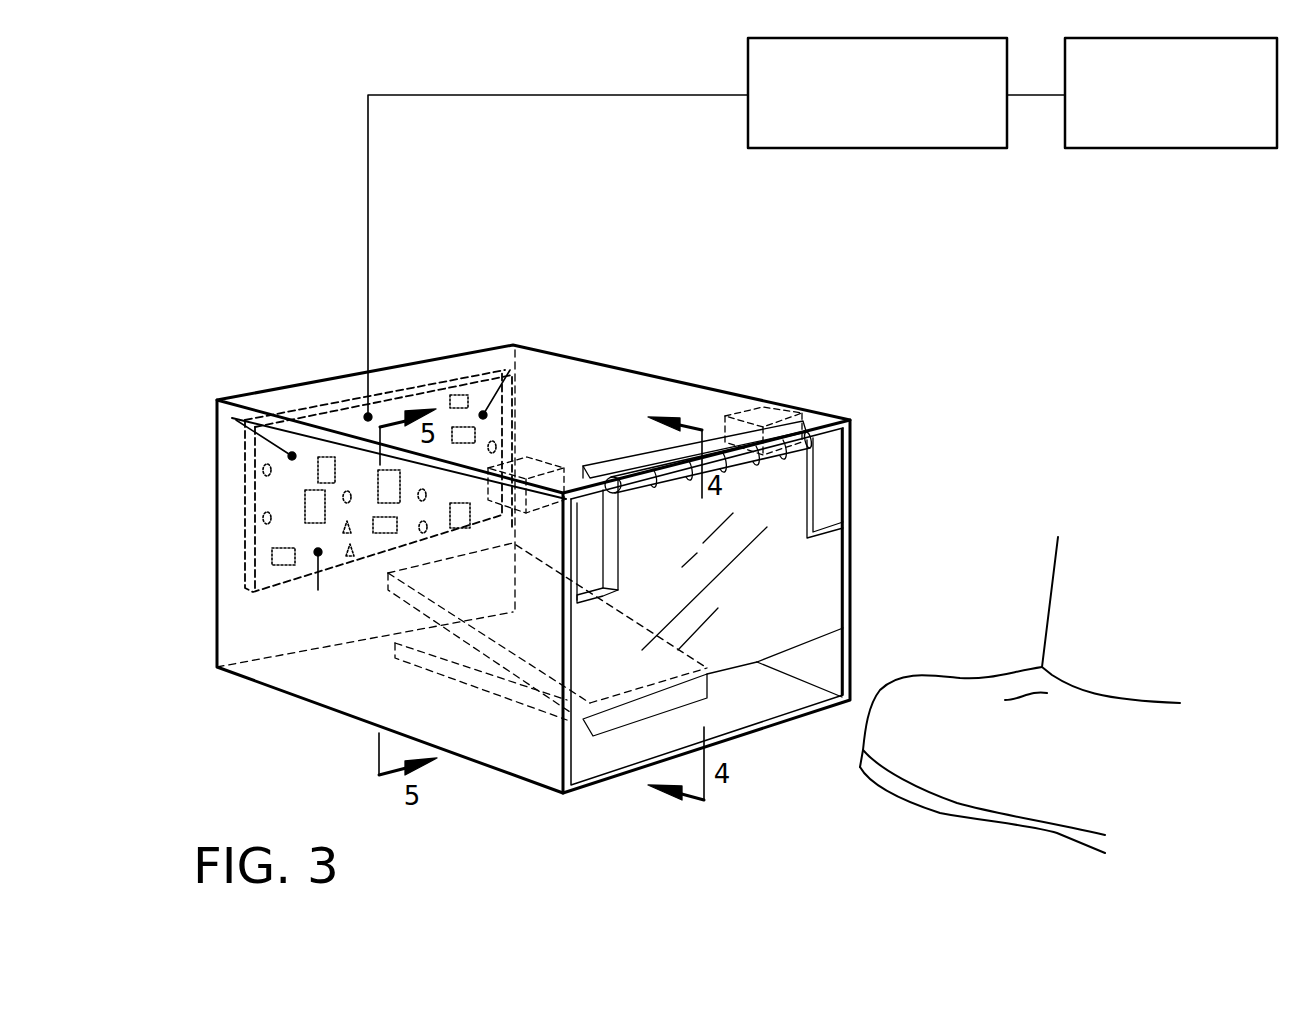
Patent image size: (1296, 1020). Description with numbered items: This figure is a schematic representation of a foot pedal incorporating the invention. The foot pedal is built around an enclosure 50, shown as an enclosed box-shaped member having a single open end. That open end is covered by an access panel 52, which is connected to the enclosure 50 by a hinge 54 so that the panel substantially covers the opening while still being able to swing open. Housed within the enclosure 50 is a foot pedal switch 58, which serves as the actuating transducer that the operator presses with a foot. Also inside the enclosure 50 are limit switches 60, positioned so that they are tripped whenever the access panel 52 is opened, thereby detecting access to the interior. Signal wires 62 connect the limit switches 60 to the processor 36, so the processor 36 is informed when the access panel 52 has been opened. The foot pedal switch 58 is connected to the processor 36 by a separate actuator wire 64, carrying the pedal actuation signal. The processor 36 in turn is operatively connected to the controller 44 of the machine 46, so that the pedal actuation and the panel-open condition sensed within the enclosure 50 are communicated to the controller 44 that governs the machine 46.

The processor 36 is at (282, 504).
The controller 44 is at (877, 148).
The machine 46 is at (1177, 148).
The enclosure 50 is at (235, 610).
The access panel 52 is at (815, 600).
The hinge 54 is at (642, 482).
The foot pedal switch 58 is at (690, 696).
The limit switches 60 is at (527, 467).
The signal wires 62 is at (613, 398).
The actuator wire 64 is at (318, 590).